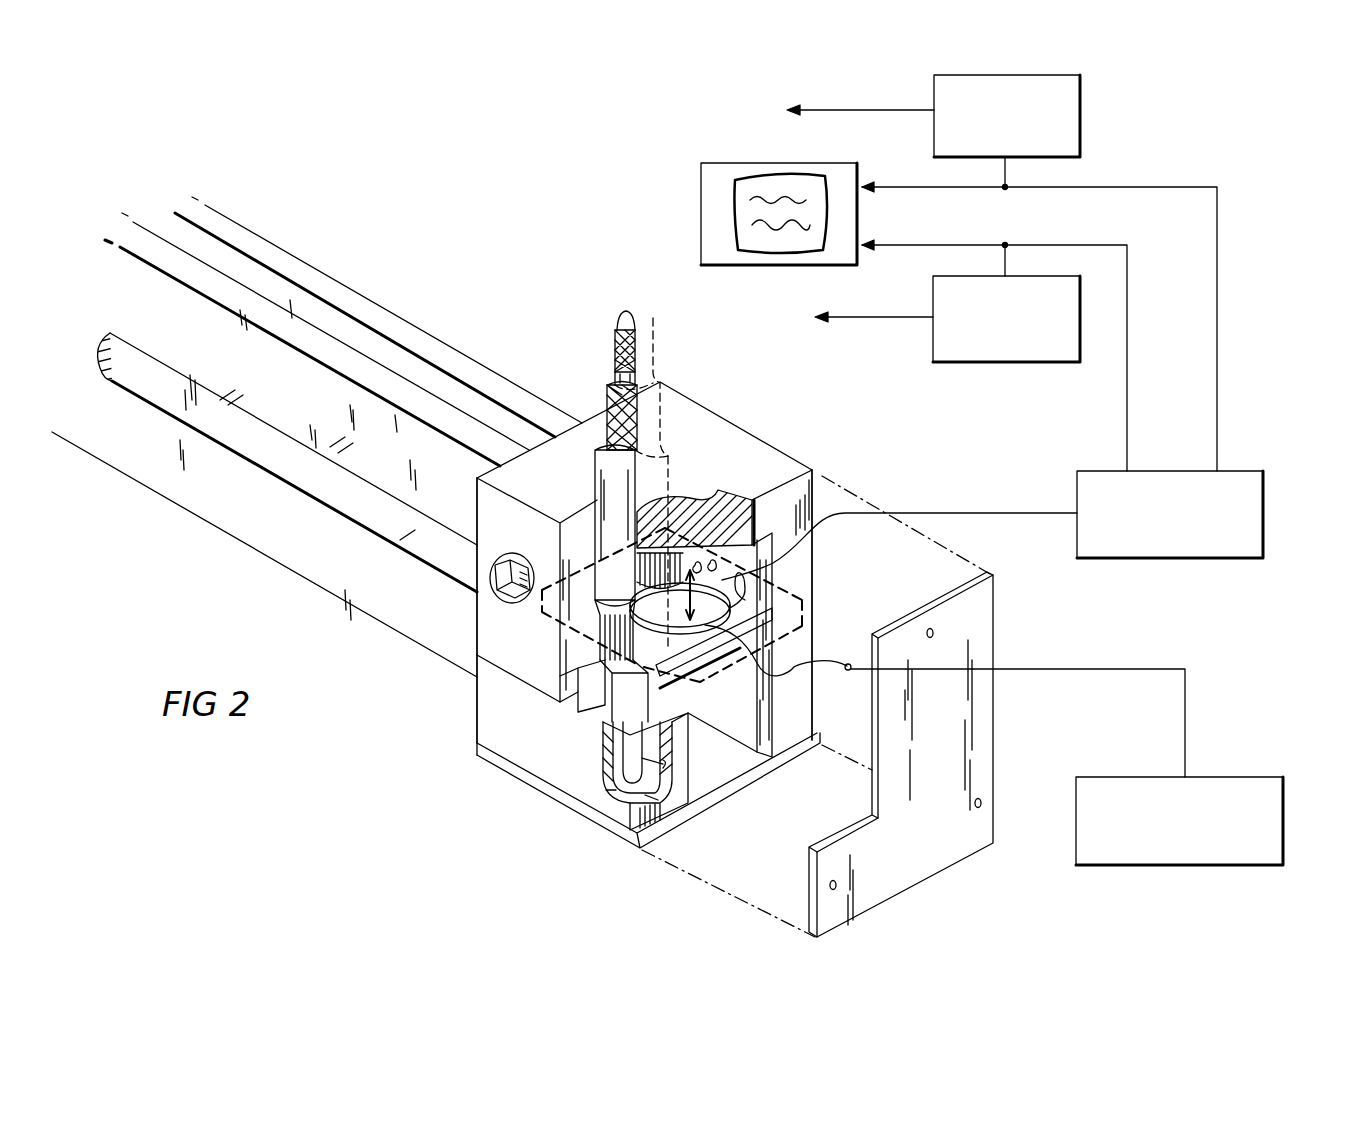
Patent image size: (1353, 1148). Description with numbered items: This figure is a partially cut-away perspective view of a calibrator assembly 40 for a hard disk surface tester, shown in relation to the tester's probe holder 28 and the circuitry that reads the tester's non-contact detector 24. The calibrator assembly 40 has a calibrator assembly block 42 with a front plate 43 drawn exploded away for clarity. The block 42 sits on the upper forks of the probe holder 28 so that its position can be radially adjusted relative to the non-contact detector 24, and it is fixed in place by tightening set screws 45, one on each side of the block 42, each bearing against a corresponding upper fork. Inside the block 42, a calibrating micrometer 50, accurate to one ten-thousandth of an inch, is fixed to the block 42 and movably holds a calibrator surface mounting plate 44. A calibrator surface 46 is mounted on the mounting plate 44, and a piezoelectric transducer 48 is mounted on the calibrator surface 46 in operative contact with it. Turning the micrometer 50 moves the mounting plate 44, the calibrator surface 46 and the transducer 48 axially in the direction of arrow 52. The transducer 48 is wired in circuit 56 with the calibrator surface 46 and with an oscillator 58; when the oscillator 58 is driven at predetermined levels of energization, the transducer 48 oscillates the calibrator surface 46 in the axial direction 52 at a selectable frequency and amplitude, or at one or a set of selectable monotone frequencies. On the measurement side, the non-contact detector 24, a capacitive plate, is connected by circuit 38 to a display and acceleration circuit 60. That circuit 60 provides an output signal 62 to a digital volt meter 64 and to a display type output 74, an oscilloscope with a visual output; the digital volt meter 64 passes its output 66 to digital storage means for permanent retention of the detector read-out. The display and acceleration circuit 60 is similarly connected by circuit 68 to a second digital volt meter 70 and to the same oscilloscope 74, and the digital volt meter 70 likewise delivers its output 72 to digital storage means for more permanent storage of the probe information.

The non-contact detector 24 is at (703, 517).
The probe holder 28 is at (373, 302).
The circuit 38 is at (1034, 513).
The calibrator assembly 40 is at (717, 410).
The calibrator assembly block 42 is at (800, 458).
The front plate 43 is at (943, 855).
The calibrator surface mounting plate 44 is at (718, 660).
The set screw 45 is at (490, 592).
The calibrator surface 46 is at (728, 590).
The piezoelectric transducer 48 is at (722, 567).
The calibrating micrometer 50 is at (617, 336).
The arrow 52 is at (772, 617).
The circuit 56 is at (1120, 669).
The oscillator 58 is at (1262, 775).
The display and acceleration circuit 60 is at (1265, 488).
The output signal 62 is at (1197, 187).
The digital volt meter 64 is at (1080, 115).
The output 66 is at (870, 90).
The circuit 68 is at (1128, 308).
The digital volt meter 70 is at (1020, 362).
The output for digital storage 72 is at (905, 303).
The display type output 74 is at (825, 163).